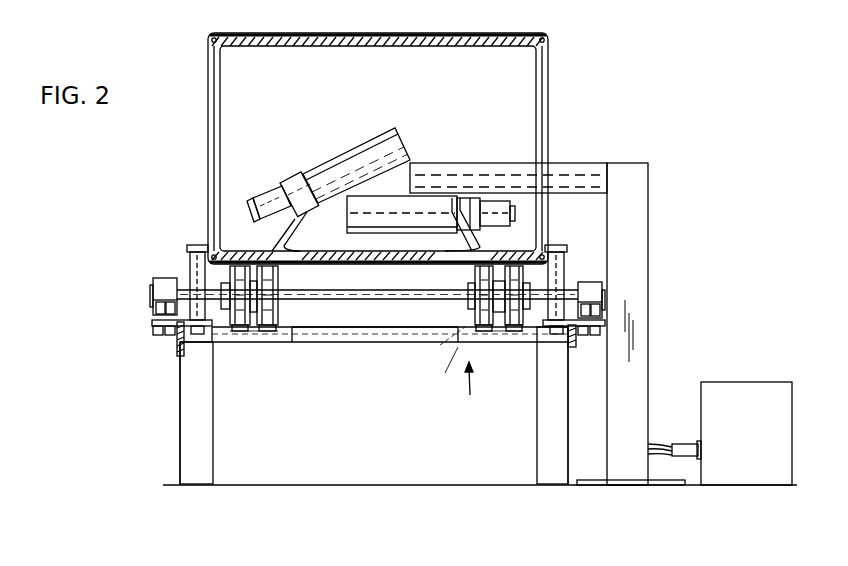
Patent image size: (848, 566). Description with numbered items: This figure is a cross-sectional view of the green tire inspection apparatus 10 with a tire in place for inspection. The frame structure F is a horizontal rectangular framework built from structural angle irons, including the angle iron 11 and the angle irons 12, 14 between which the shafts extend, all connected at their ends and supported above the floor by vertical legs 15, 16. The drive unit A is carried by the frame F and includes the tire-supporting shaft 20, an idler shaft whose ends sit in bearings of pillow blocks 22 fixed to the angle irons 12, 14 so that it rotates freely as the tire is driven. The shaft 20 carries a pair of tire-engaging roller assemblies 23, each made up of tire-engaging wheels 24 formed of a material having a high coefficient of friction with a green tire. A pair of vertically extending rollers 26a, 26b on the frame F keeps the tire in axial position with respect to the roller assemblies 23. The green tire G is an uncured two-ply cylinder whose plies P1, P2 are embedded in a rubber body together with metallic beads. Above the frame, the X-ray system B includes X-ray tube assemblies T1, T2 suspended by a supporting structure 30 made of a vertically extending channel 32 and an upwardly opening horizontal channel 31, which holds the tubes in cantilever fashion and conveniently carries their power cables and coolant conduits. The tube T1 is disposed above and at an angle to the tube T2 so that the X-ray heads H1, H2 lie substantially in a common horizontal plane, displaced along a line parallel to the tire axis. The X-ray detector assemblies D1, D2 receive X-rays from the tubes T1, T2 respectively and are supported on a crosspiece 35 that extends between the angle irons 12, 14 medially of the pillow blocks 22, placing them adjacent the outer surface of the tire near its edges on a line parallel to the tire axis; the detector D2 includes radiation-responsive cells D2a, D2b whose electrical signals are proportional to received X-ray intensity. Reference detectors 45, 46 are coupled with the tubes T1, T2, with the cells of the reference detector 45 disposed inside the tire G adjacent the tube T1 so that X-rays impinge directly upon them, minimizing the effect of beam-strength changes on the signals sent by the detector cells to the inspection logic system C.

The apparatus 10 is at (130, 208).
The frame structure F is at (184, 390).
The vertical leg 15 is at (206, 446).
The vertical leg 16 is at (541, 447).
The structural angle iron 11 is at (318, 316).
The crosspiece 35 is at (375, 352).
The structural angle iron 14 is at (176, 341).
The structural angle iron 12 is at (578, 342).
The vertically extending roller 26a is at (192, 250).
The vertically extending roller 26b is at (565, 252).
The tire-supporting shaft 20 is at (339, 297).
The pillow block 22 is at (166, 279).
The tire-engaging roller assembly 23 is at (280, 271).
The tire-engaging wheel 24 is at (240, 331).
The X-ray detector assembly D1 is at (290, 330).
The X-ray detector assembly D2 is at (482, 331).
The detector cell D2a is at (462, 330).
The detector cell D2b is at (446, 373).
The drive unit A is at (474, 387).
The green tire G is at (355, 148).
The ply P1 is at (317, 47).
The ply P2 is at (256, 47).
The horizontal channel 31 is at (558, 170).
The supporting structure 30 is at (653, 203).
The vertically extending channel 32 is at (648, 336).
The inspection logic system C is at (760, 456).
The X-ray tube assembly T2 is at (392, 214).
The X-ray head H2 is at (491, 222).
The X-ray system B is at (352, 168).
The X-ray tube assembly T1 is at (318, 166).
The X-ray head H1 is at (263, 192).
The reference detector 45 is at (288, 250).
The standard detector 46 is at (458, 256).